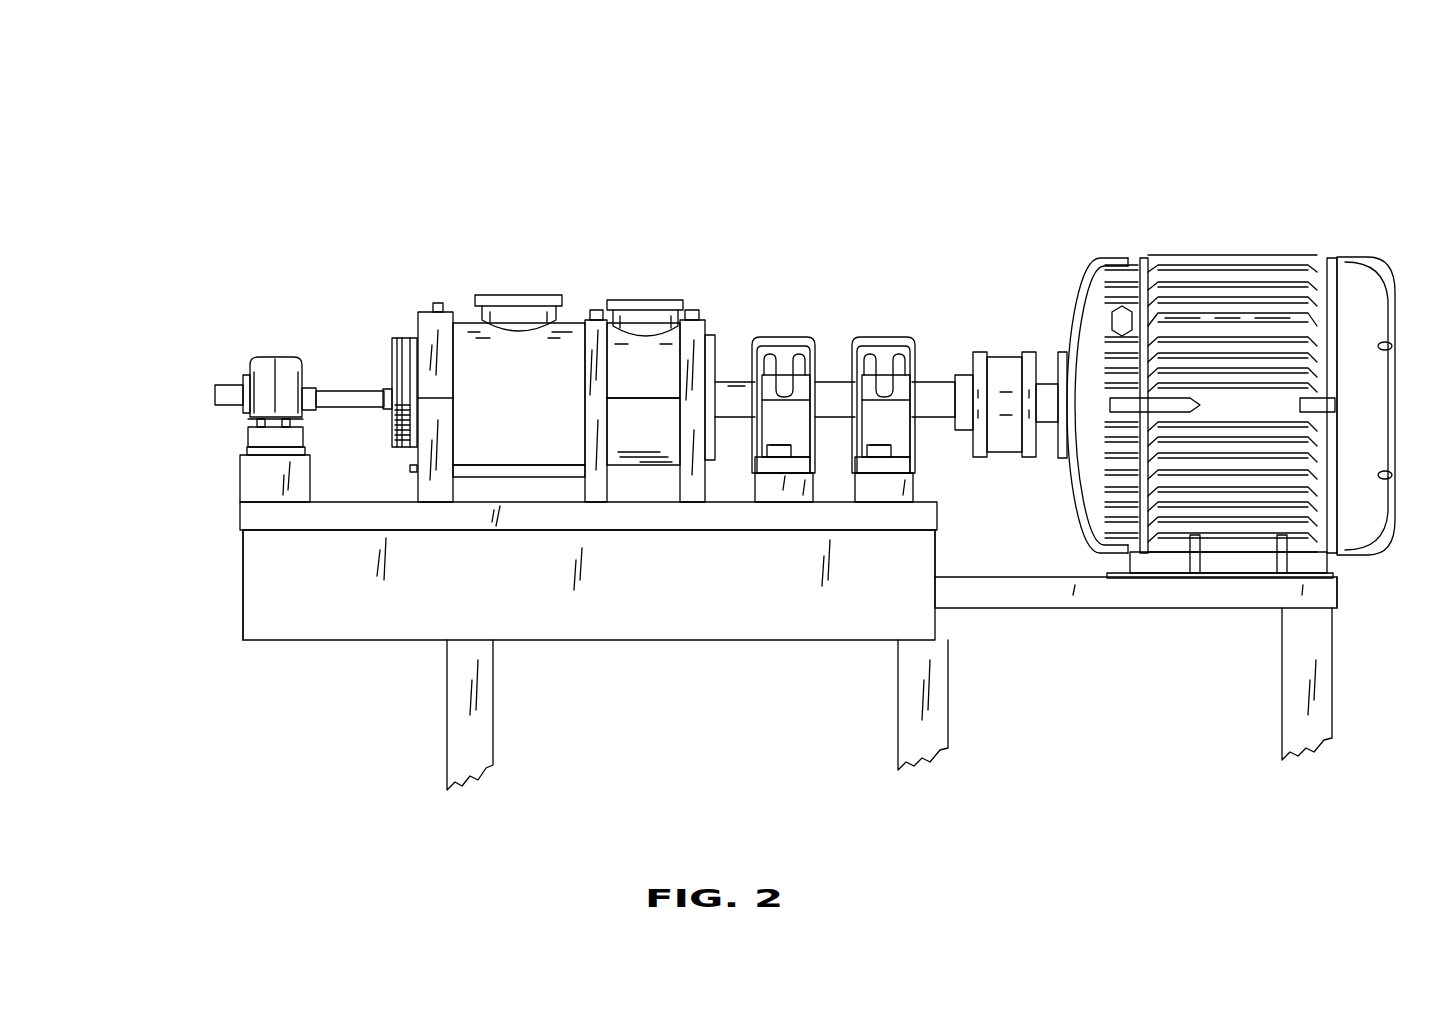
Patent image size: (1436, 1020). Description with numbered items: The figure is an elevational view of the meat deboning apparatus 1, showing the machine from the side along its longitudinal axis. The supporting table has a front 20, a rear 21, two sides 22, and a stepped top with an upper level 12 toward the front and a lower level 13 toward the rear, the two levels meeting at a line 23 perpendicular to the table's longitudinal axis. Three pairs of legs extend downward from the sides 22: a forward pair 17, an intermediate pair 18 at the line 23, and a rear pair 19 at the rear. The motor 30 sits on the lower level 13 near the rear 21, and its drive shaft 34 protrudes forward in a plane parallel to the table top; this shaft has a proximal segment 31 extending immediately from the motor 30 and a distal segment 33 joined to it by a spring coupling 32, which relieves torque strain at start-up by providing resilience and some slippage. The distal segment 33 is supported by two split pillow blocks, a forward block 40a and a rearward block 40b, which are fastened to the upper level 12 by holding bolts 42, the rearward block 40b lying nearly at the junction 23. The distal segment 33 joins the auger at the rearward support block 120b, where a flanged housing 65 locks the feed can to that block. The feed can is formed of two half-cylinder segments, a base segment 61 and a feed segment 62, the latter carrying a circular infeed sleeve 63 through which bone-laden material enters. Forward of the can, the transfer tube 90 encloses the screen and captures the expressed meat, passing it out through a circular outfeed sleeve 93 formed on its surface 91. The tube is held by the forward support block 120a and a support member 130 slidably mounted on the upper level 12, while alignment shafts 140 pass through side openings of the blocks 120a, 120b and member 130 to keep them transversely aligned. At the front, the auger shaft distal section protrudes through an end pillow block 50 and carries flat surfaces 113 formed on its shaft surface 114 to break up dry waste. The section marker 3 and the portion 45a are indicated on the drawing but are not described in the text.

The meat deboning apparatus 1 is at (1295, 104).
The section line of FIG. 3 is at (258, 163).
The upper level 12 is at (384, 502).
The lower level 13 is at (977, 577).
The forward pair of legs 17 is at (447, 688).
The intermediate pair of legs 18 is at (898, 696).
The rear pair of legs 19 is at (1332, 672).
The front 20 is at (243, 556).
The rear 21 is at (1340, 588).
The sides 22 is at (681, 612).
The line 23 is at (933, 556).
The motor 30 is at (1283, 255).
The proximal segment 31 is at (1048, 384).
The spring coupling 32 is at (1003, 352).
The distal segment 33 is at (740, 420).
The motor drive shaft 34 is at (1002, 115).
The forward block 40a is at (770, 337).
The rearward block 40b is at (870, 337).
The holding bolts 42 is at (886, 445).
The shaft section 45a is at (738, 380).
The end pillow block 50 is at (265, 357).
The base segment 61 is at (652, 428).
The feed segment 62 is at (652, 371).
The infeed sleeve 63 is at (618, 300).
The flanged housing 65 is at (712, 460).
The transfer tube 90 is at (552, 371).
The transfer tube surface 91 is at (530, 399).
The outfeed sleeve 93 is at (517, 296).
The flat surfaces 113 is at (340, 395).
The shaft surface 114 is at (310, 393).
The forward support block 120a is at (590, 318).
The rearward support block 120b is at (700, 318).
The support member 130 is at (425, 313).
The alignment shaft 140 is at (485, 465).